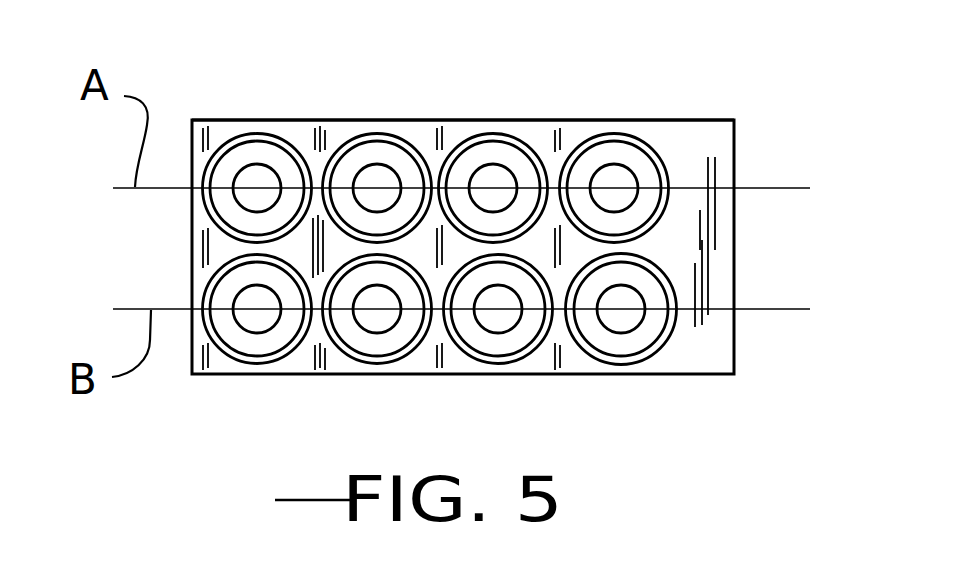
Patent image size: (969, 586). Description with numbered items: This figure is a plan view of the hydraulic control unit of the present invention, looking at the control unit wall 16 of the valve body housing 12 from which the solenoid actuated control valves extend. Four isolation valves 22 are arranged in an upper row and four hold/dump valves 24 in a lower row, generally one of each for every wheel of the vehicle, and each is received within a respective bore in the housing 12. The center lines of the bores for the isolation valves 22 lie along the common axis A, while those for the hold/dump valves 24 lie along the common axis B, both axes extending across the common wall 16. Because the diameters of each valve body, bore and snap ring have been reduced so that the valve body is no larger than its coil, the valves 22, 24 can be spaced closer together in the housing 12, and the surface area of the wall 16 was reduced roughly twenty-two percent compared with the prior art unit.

The valve body housing 12 is at (188, 252).
The control unit wall 16 is at (565, 120).
The isolation valve 22 is at (635, 165).
The hold/dump valve 24 is at (637, 335).